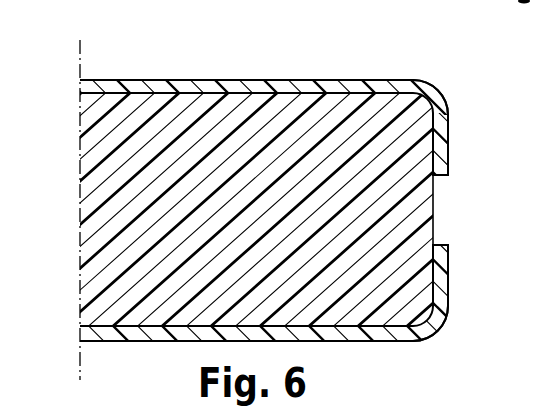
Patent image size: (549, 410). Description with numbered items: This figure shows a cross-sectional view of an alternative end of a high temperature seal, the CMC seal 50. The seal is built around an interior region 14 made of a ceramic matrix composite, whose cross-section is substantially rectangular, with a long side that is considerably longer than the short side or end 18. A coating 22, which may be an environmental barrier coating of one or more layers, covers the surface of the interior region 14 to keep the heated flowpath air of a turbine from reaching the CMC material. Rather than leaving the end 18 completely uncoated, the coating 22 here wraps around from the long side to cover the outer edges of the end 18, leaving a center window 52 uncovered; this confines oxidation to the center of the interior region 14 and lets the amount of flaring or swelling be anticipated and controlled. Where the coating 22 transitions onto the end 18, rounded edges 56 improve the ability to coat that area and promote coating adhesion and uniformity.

The CMC seal 50 is at (145, 46).
The interior region 14 is at (103, 242).
The coating 22 is at (245, 87).
The rounded edges 56 is at (424, 92).
The end 18 is at (433, 193).
The center window 52 is at (439, 213).